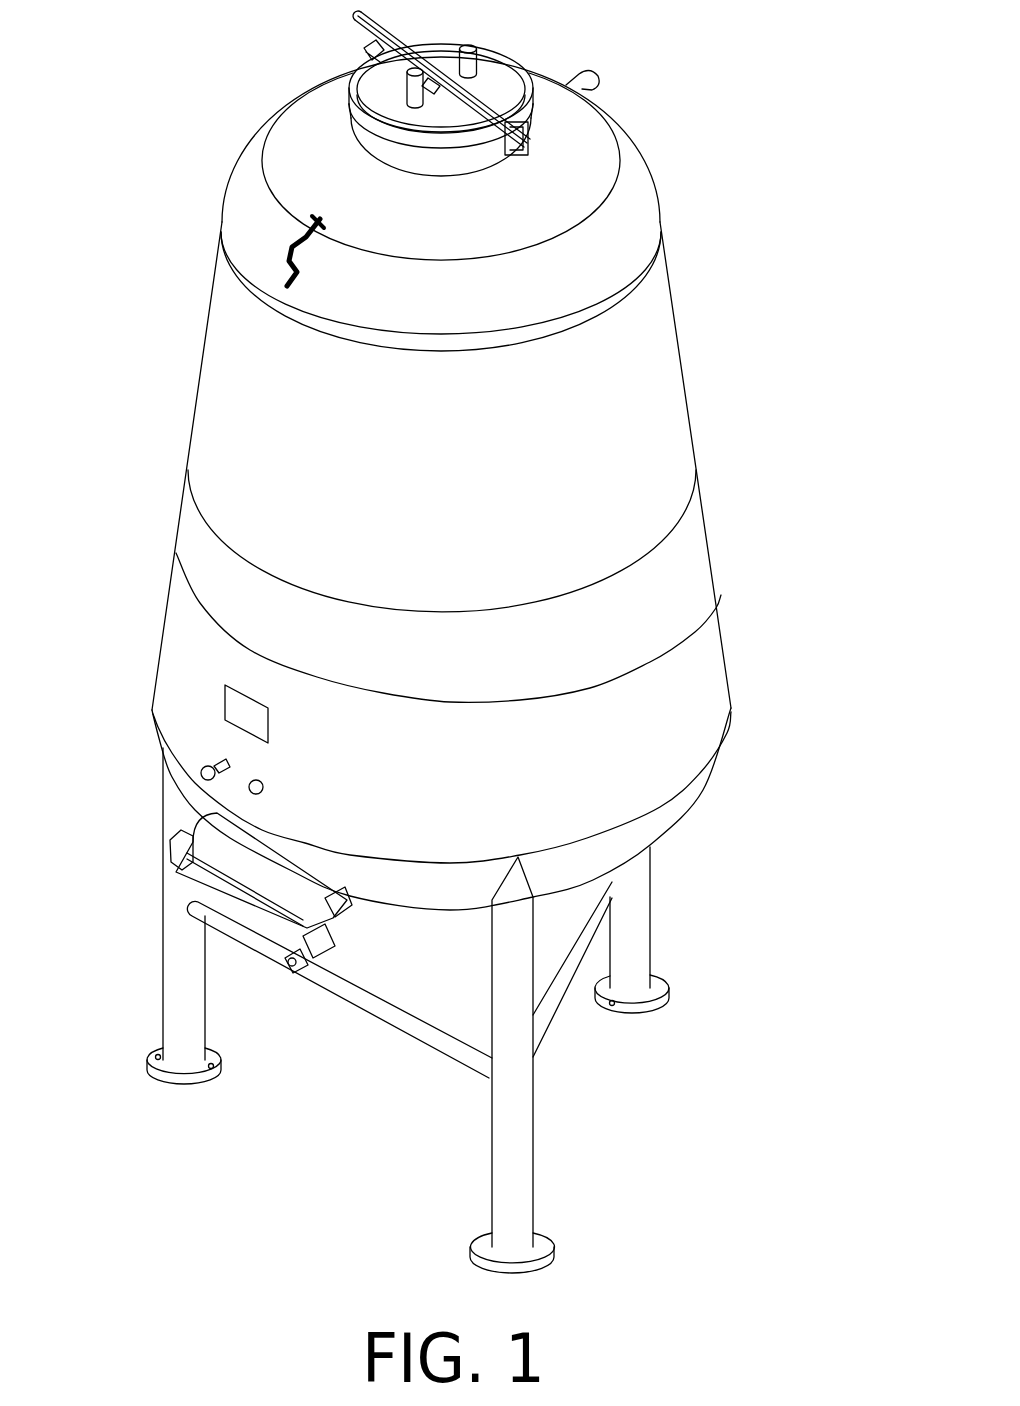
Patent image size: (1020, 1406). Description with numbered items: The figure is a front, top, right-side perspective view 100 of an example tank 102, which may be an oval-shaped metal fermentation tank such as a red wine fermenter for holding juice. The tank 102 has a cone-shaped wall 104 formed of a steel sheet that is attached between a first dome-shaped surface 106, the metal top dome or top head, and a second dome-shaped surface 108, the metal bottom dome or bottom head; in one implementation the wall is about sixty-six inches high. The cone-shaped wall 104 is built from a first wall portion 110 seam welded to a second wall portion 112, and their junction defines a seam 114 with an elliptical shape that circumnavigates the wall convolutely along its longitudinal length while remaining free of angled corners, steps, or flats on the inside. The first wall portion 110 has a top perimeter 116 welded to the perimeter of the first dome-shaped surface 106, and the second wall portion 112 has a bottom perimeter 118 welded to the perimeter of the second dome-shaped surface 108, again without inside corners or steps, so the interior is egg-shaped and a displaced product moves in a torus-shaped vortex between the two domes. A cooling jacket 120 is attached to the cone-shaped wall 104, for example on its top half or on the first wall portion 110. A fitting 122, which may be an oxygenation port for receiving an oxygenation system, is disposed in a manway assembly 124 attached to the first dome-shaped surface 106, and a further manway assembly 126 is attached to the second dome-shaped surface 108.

The front, top, right-side perspective view 100 is at (740, 1275).
The tank 102 is at (131, 45).
The cone-shaped wall 104 is at (218, 222).
The first dome-shaped surface 106 is at (652, 137).
The second dome-shaped surface 108 is at (723, 765).
The first wall portion 110 is at (665, 222).
The second wall portion 112 is at (730, 612).
The seam 114 is at (563, 697).
The top perimeter 116 is at (553, 317).
The bottom perimeter 118 is at (587, 838).
The cooling jacket 120 is at (455, 479).
The fitting 122 is at (477, 50).
The manway assembly 124 is at (363, 47).
The manway assembly 126 is at (192, 827).